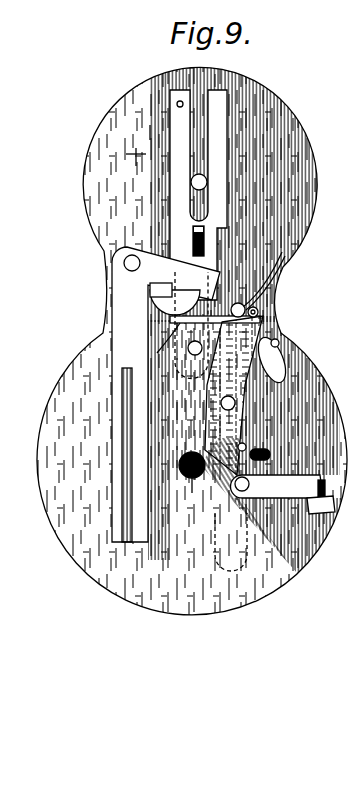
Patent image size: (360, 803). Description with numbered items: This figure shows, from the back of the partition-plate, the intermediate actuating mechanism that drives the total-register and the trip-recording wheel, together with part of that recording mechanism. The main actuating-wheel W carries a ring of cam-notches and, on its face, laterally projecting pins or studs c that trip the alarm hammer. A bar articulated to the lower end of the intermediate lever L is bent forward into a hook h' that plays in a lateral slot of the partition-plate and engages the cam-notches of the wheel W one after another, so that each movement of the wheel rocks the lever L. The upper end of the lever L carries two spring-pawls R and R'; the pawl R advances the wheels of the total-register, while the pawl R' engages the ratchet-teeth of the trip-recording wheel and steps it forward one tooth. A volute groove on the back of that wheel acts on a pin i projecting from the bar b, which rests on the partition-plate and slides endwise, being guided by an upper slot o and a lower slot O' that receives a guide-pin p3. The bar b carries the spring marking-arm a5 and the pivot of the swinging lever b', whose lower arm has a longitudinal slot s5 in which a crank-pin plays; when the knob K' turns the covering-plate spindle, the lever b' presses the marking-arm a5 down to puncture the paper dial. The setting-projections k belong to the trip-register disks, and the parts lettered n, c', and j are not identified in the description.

The stud or pin i is at (176, 104).
The upper slot o is at (147, 133).
The pins or studs c is at (136, 157).
The plate n is at (246, 325).
The bar b is at (198, 195).
The spring marking-arm a5 is at (188, 238).
The swinging arm or lever b' is at (166, 394).
The longitudinal slot s5 is at (112, 487).
The spring-pawl R is at (205, 318).
The spring-pawl R' is at (276, 281).
The lower slot O' is at (244, 292).
The guide-pin p3 is at (191, 333).
The intermediate lever L is at (234, 395).
The roller c' is at (272, 372).
The pin j is at (254, 446).
The setting-projections k is at (277, 486).
The hook h' is at (333, 489).
The main actuating-wheel W is at (329, 508).
The knob or handle K' is at (190, 340).